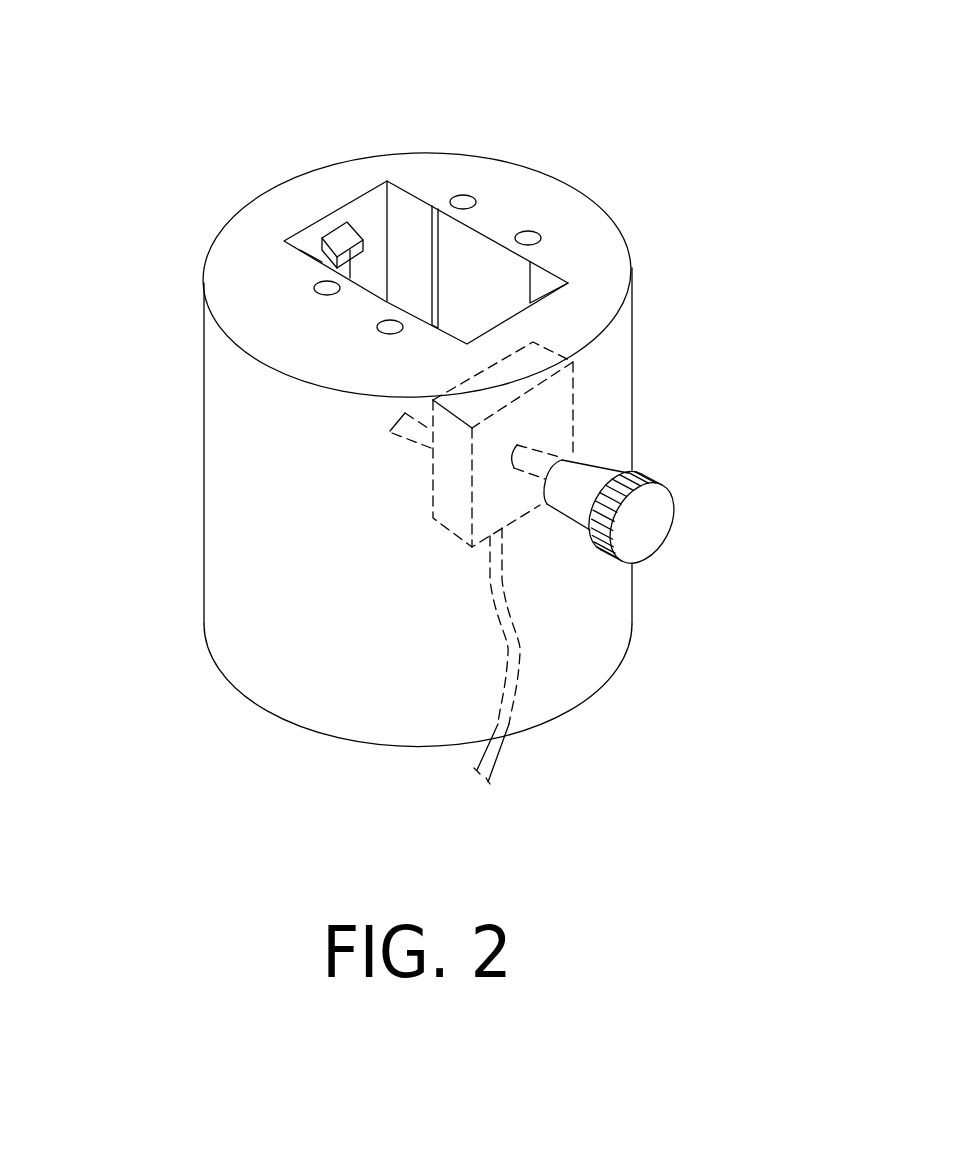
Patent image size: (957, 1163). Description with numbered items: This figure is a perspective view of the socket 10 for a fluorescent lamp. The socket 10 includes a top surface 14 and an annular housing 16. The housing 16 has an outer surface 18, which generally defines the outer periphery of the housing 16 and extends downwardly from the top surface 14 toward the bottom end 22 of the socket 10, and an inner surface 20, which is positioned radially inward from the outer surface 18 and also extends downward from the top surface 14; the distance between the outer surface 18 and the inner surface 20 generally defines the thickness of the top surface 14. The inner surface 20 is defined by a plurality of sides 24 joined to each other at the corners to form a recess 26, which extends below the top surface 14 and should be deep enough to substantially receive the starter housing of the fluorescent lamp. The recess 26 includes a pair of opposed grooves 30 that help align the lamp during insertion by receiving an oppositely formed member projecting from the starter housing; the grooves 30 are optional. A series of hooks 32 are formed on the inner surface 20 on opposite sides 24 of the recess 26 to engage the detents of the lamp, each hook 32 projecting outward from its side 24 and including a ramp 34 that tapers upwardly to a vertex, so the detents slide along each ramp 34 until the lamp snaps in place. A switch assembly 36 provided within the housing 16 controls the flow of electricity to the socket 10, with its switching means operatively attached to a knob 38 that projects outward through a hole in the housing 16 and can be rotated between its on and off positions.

The socket 10 is at (722, 253).
The top surface 14 is at (577, 243).
The housing 16 is at (638, 372).
The outer surface 18 is at (245, 472).
The inner surface 20 is at (416, 222).
The bottom end 22 is at (272, 715).
The sides 24 is at (307, 242).
The recess 26 is at (408, 240).
The grooves 30 is at (328, 268).
The hooks 32 is at (328, 240).
The ramp 34 is at (356, 232).
The switch assembly 36 is at (432, 508).
The knob 38 is at (648, 513).